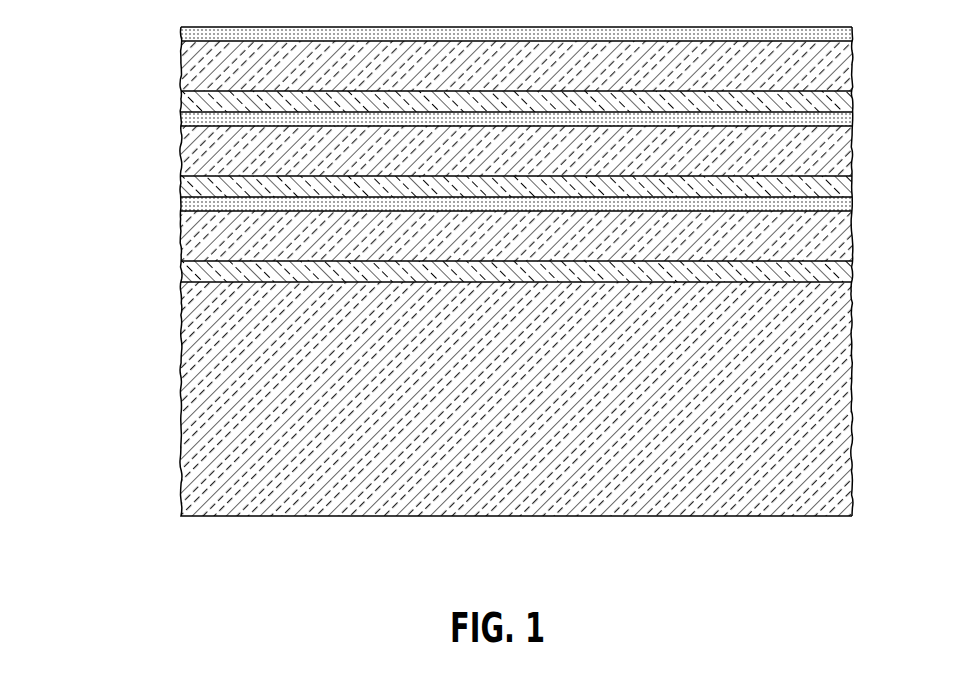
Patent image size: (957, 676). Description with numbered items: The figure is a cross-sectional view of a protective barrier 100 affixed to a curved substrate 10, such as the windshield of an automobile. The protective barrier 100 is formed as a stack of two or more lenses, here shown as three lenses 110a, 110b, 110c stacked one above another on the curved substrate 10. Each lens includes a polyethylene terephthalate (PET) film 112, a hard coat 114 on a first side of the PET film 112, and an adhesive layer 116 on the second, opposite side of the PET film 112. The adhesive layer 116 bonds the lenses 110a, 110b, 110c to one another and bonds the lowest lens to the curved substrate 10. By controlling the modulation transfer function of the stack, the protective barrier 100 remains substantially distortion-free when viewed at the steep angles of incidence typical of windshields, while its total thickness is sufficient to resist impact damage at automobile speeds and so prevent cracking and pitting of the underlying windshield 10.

The curved substrate 10 is at (200, 372).
The protective barrier 100 is at (463, 152).
The lens 110a is at (502, 234).
The lens 110b is at (160, 112).
The lens 110c is at (160, 27).
The polyethylene terephthalate (PET) film 112 is at (835, 240).
The hard coat 114 is at (842, 203).
The adhesive layer 116 is at (835, 270).